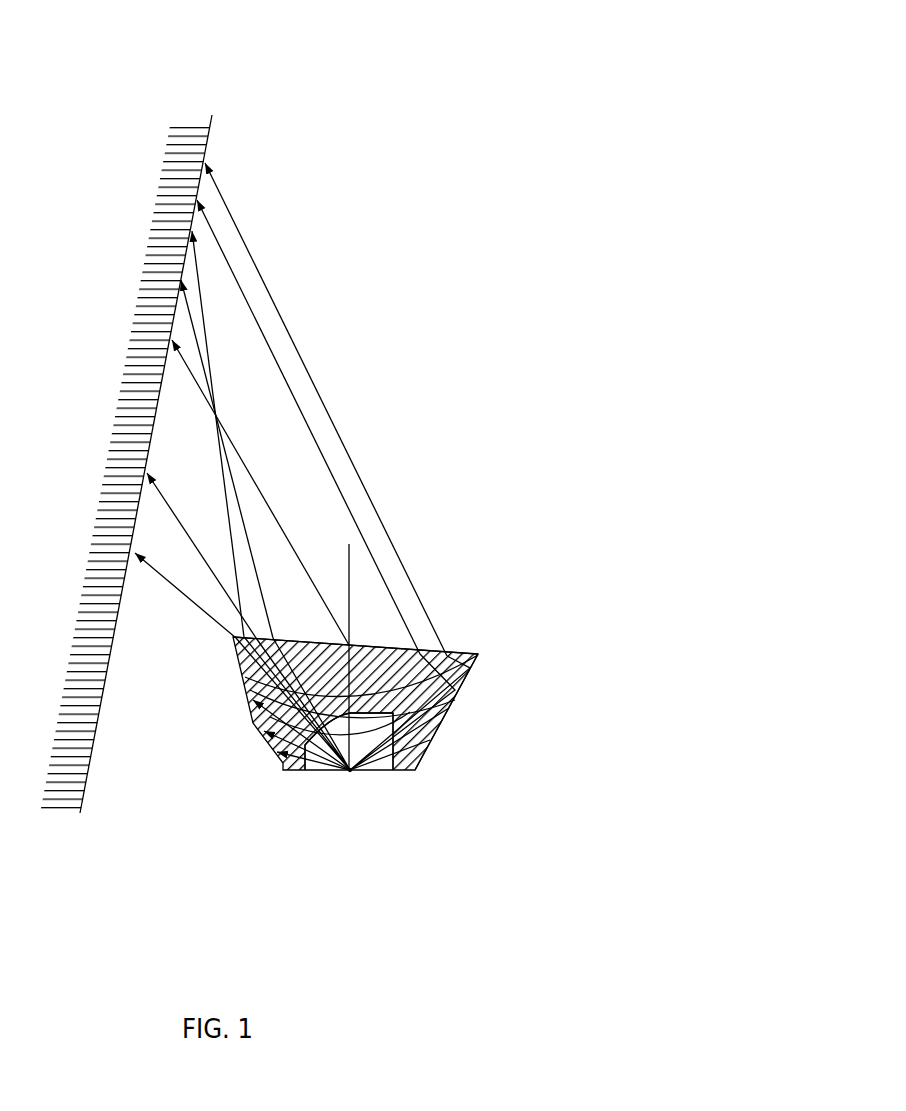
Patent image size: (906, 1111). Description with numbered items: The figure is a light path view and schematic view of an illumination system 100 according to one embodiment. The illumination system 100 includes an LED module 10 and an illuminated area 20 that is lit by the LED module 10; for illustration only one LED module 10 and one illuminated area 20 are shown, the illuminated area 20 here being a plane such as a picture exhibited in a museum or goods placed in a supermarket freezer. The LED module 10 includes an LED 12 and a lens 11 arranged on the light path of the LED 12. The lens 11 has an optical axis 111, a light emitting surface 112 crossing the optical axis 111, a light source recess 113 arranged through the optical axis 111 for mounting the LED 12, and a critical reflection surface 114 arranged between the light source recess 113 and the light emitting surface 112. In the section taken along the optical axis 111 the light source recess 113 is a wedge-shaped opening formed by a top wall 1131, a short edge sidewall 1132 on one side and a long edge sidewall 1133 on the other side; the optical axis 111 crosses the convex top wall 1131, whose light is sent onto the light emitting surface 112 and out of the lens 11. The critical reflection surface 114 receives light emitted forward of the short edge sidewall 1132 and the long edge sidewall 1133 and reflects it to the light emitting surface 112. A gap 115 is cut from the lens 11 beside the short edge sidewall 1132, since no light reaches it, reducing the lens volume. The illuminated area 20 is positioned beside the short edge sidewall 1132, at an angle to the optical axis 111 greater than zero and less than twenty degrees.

The illumination system 100 is at (410, 53).
The illuminated area 20 is at (185, 265).
The LED module 10 is at (365, 509).
The lens 11 is at (414, 735).
The optical axis 111 is at (357, 634).
The light emitting surface 112 is at (441, 706).
The gap 115 is at (460, 688).
The critical reflection surface 114 is at (420, 738).
The light source recess 113 is at (417, 784).
The top wall 1131 is at (314, 745).
The short edge sidewall 1132 is at (312, 748).
The long edge sidewall 1133 is at (378, 757).
The LED 12 is at (350, 772).